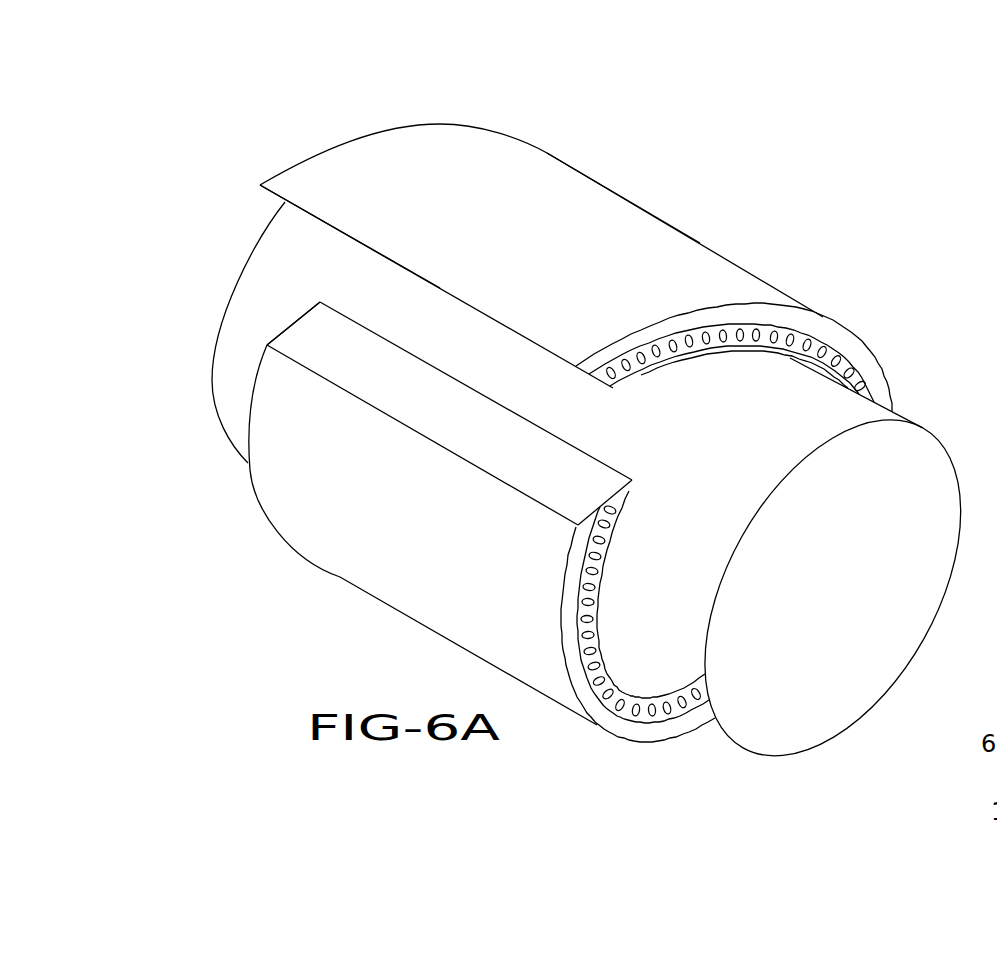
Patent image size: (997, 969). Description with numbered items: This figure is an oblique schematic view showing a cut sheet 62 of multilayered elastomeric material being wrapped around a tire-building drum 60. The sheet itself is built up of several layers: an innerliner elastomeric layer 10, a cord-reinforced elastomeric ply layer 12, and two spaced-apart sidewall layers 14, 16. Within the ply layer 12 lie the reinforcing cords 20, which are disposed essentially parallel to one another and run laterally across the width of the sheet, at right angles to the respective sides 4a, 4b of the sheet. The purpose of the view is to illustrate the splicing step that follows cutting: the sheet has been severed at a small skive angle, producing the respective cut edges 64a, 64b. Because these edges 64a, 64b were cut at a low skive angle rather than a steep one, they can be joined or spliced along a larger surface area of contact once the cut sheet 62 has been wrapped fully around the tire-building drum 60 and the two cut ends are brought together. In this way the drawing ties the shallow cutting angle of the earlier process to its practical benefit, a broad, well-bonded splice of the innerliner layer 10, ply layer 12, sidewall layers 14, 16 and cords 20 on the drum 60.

The side of sheet 4a is at (280, 172).
The side of sheet 4b is at (645, 742).
The innerliner elastomeric layer 10 is at (595, 595).
The cord-reinforced elastomeric ply layer 12 is at (850, 363).
The sidewall layer 14 is at (793, 320).
The sidewall layer 16 is at (731, 363).
The reinforcing cords 20 is at (702, 336).
The tire-building drum 60 is at (930, 477).
The cut sheet 62 is at (553, 190).
The cut edge 64a is at (317, 330).
The cut edge 64b is at (592, 366).